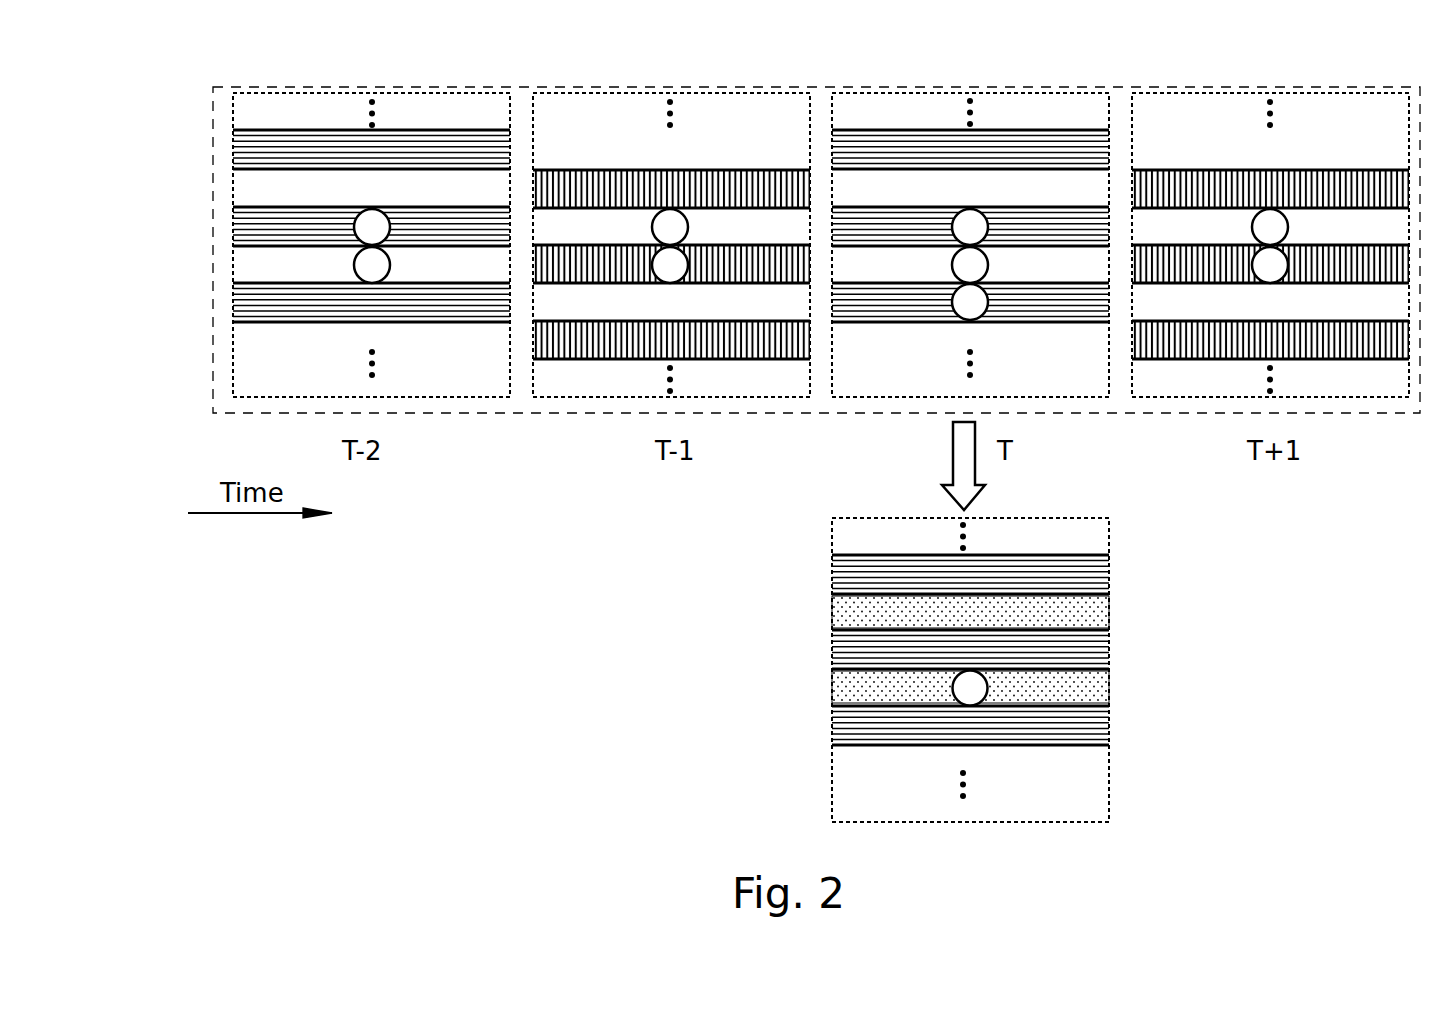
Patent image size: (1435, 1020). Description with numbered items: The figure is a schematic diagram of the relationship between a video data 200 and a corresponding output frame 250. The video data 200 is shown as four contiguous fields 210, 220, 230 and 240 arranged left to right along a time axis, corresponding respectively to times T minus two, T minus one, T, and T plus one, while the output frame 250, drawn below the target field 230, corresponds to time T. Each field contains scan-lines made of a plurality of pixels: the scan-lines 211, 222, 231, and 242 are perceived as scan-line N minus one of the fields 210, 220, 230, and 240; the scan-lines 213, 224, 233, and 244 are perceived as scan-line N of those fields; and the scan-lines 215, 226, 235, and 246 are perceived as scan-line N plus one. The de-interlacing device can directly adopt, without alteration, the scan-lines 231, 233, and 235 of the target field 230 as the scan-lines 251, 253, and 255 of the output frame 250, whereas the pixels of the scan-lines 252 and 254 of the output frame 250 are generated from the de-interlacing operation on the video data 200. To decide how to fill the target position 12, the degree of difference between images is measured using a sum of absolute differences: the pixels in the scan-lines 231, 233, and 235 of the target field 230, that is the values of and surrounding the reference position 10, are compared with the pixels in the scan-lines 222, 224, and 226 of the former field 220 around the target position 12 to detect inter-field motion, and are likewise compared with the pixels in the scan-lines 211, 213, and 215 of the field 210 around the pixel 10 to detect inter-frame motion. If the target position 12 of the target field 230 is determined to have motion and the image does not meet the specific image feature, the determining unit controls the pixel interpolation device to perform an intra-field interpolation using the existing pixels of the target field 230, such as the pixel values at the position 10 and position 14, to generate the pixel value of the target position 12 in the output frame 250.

The video data 200 is at (278, 87).
The field 210 is at (437, 93).
The field 220 is at (737, 93).
The target field 230 is at (1037, 93).
The field 240 is at (1337, 93).
The output frame 250 is at (1073, 518).
The scan-line 211 is at (240, 147).
The scan-line 213 is at (240, 224).
The scan-line 215 is at (240, 300).
The scan-line 222 is at (552, 170).
The scan-line 224 is at (552, 246).
The scan-line 226 is at (552, 323).
The scan-line 231 is at (850, 140).
The scan-line 233 is at (850, 215).
The scan-line 235 is at (850, 292).
The scan-line 242 is at (1152, 170).
The scan-line 244 is at (1152, 246).
The scan-line 246 is at (1152, 323).
The scan-line 251 is at (1090, 577).
The scan-line 252 is at (1090, 617).
The scan-line 253 is at (1090, 655).
The scan-line 254 is at (1090, 692).
The scan-line 255 is at (1090, 728).
The reference position 10 is at (372, 217).
The target position 12 is at (380, 265).
The position 14 is at (978, 300).